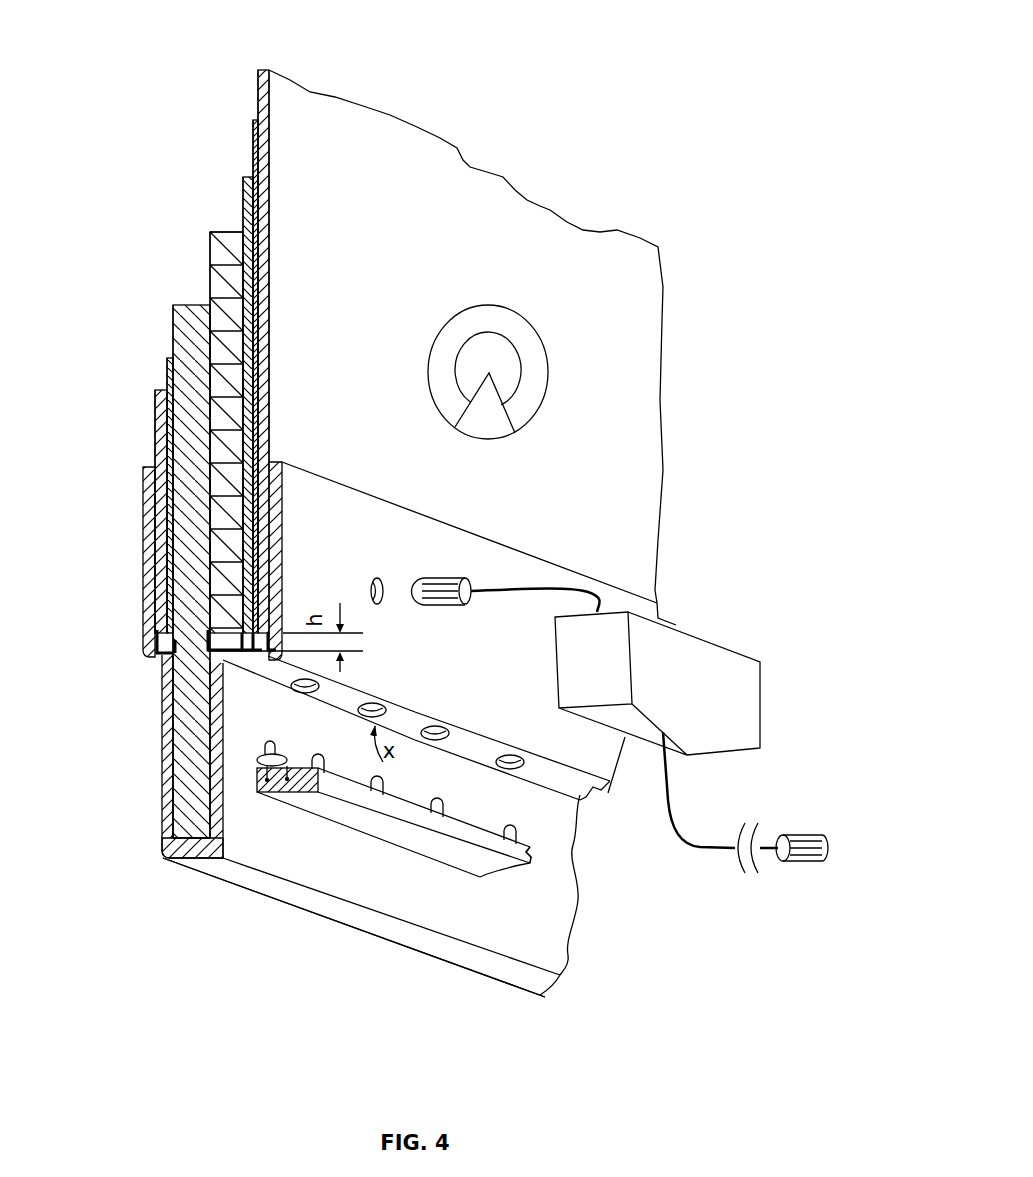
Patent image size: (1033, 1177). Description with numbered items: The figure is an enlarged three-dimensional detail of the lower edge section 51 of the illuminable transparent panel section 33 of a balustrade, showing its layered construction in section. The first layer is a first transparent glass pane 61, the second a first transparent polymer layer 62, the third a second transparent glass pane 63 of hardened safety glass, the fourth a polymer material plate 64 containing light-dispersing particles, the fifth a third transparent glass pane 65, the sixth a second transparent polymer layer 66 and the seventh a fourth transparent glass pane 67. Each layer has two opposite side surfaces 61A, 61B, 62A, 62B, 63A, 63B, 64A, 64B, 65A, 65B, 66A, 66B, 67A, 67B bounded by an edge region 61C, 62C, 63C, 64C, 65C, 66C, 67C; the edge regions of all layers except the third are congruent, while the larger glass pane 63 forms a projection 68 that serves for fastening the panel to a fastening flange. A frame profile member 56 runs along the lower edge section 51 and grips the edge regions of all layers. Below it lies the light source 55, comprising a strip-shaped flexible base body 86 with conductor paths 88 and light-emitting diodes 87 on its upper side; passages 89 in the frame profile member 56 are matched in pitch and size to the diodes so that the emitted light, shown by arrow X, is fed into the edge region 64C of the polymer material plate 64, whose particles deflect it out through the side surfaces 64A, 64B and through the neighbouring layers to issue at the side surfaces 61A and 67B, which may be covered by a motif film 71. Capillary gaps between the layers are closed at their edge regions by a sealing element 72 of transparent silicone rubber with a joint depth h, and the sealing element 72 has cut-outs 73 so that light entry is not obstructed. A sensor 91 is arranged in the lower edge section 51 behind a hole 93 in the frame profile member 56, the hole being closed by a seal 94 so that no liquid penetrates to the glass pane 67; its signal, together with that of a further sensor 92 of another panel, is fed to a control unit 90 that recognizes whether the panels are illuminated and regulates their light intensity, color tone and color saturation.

The panel section 33 is at (690, 240).
The lower edge section 51 is at (333, 934).
The light source 55 is at (535, 858).
The frame profile member 56 is at (482, 942).
The first transparent glass pane 61 is at (158, 455).
The side surface of first glass pane 61A is at (155, 435).
The side surface of first glass pane 61B is at (168, 437).
The edge region of first glass pane 61C is at (158, 657).
The first transparent polymer layer 62 is at (170, 376).
The side surface of first polymer layer 62A is at (168, 378).
The side surface of first polymer layer 62B is at (178, 378).
The edge region of first polymer layer 62C is at (175, 656).
The second transparent glass pane 63 is at (190, 324).
The side surface of second glass pane 63A is at (172, 338).
The side surface of second glass pane 63B is at (213, 338).
The edge region of second glass pane 63C is at (188, 843).
The polymer material plate 64 is at (212, 246).
The side surface of polymer material plate 64A is at (211, 270).
The side surface of polymer material plate 64B is at (246, 270).
The edge region of polymer material plate 64C is at (240, 656).
The third transparent glass pane 65 is at (245, 192).
The side surface of third glass pane 65A is at (243, 207).
The side surface of third glass pane 65B is at (258, 206).
The edge region of third glass pane 65C is at (249, 656).
The second transparent polymer layer 66 is at (253, 137).
The side surface of second polymer layer 66A is at (252, 157).
The side surface of second polymer layer 66B is at (262, 156).
The edge region of second polymer layer 66C is at (243, 664).
The fourth transparent glass pane 67 is at (353, 125).
The side surface of fourth glass pane 67A is at (256, 92).
The side surface of fourth glass pane 67B is at (270, 100).
The edge region of fourth glass pane 67C is at (259, 662).
The projection 68 is at (147, 804).
The motif film 71 is at (535, 390).
The sealing element 72 is at (143, 613).
The cut-outs 73 is at (512, 775).
The base body 86 is at (429, 848).
The light-emitting diodes 87 is at (530, 833).
The conductor paths 88 is at (282, 793).
The passages 89 is at (516, 771).
The control unit 90 is at (745, 676).
The sensor 91 is at (471, 606).
The further sensor 92 is at (820, 836).
The hole 93 is at (379, 578).
The seal 94 is at (382, 606).